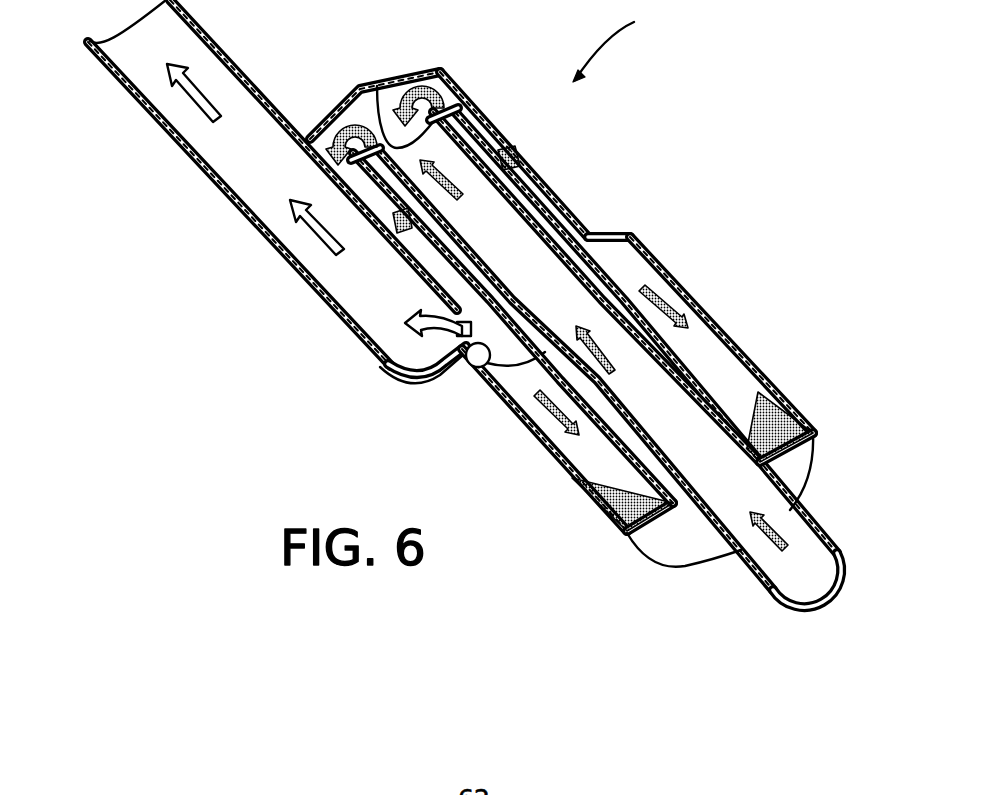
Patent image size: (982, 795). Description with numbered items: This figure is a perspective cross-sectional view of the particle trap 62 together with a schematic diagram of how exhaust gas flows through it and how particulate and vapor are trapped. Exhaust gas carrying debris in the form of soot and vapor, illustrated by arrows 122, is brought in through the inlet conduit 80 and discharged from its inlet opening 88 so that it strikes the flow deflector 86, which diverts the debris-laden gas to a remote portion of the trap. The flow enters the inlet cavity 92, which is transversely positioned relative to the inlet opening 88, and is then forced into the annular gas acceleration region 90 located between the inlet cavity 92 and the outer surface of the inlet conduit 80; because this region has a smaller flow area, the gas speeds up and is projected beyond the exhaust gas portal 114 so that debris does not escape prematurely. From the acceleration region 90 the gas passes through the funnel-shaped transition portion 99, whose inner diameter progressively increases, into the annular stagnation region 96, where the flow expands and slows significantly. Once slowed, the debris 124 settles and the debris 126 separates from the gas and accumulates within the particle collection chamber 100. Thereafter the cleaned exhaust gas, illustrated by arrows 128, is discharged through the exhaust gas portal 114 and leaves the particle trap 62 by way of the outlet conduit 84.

The particle trap 62 is at (622, 44).
The inlet conduit 80 is at (747, 567).
The outlet conduit 84 is at (108, 63).
The flow deflector 86 is at (372, 92).
The inlet opening 88 is at (372, 97).
The gas acceleration region 90 is at (547, 203).
The inlet cavity 92 is at (387, 112).
The stagnation region 96 is at (713, 345).
The transition portion 99 is at (607, 240).
The particle collection chamber 100 is at (783, 397).
The exhaust gas portal 114 is at (483, 377).
The arrows 122 is at (330, 118).
The debris 124 is at (660, 297).
The debris 126 is at (807, 427).
The arrows 128 is at (185, 95).